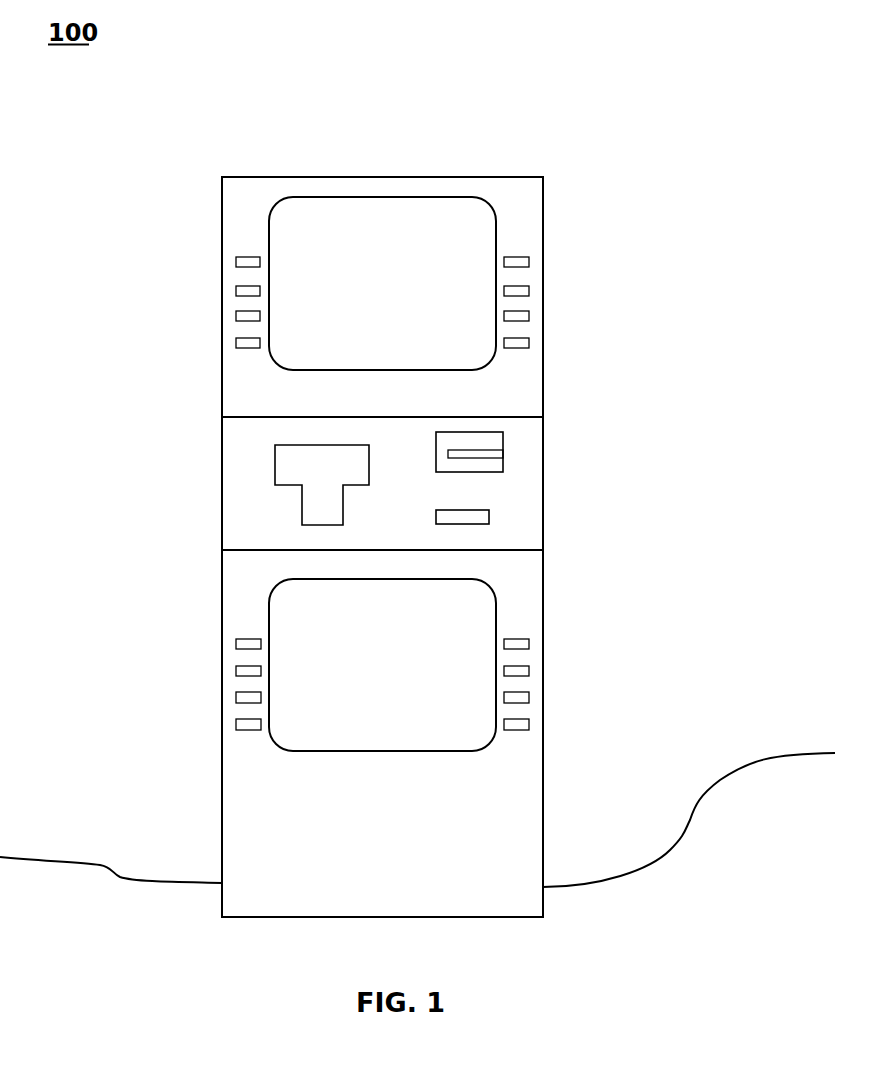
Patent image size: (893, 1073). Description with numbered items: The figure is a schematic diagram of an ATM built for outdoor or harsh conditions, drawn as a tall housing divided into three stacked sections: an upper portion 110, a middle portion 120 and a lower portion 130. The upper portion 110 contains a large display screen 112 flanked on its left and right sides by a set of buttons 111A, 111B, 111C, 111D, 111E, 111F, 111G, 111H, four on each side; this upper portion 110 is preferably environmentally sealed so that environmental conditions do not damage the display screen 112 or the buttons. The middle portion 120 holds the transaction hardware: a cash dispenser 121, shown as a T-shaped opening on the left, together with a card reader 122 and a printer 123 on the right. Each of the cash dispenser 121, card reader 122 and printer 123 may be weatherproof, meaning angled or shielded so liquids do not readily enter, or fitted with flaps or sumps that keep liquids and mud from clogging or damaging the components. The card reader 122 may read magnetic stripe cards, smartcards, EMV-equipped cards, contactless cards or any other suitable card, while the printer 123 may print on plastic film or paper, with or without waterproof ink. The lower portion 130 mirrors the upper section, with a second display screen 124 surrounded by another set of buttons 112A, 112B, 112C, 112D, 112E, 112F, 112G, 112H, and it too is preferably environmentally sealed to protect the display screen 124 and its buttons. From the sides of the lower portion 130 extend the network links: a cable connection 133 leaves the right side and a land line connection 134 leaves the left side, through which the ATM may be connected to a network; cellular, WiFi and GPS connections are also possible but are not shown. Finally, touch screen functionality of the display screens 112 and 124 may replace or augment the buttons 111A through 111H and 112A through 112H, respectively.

The upper portion 110 is at (222, 200).
The button 111A is at (236, 262).
The button 111B is at (236, 291).
The button 111C is at (236, 316).
The button 111D is at (236, 343).
The button 111E is at (529, 262).
The button 111F is at (529, 291).
The button 111G is at (529, 316).
The button 111H is at (529, 343).
The display screen 112 is at (317, 213).
The button 112A is at (236, 644).
The button 112B is at (236, 671).
The button 112C is at (236, 697).
The button 112D is at (236, 724).
The button 112E is at (529, 644).
The button 112F is at (529, 671).
The button 112G is at (529, 697).
The button 112H is at (529, 724).
The middle portion 120 is at (222, 480).
The cash dispenser 121 is at (275, 481).
The card reader 122 is at (503, 442).
The printer 123 is at (489, 517).
The display screen 124 is at (383, 751).
The lower portion 130 is at (222, 803).
The cable connection 133 is at (792, 754).
The land line connection 134 is at (182, 882).